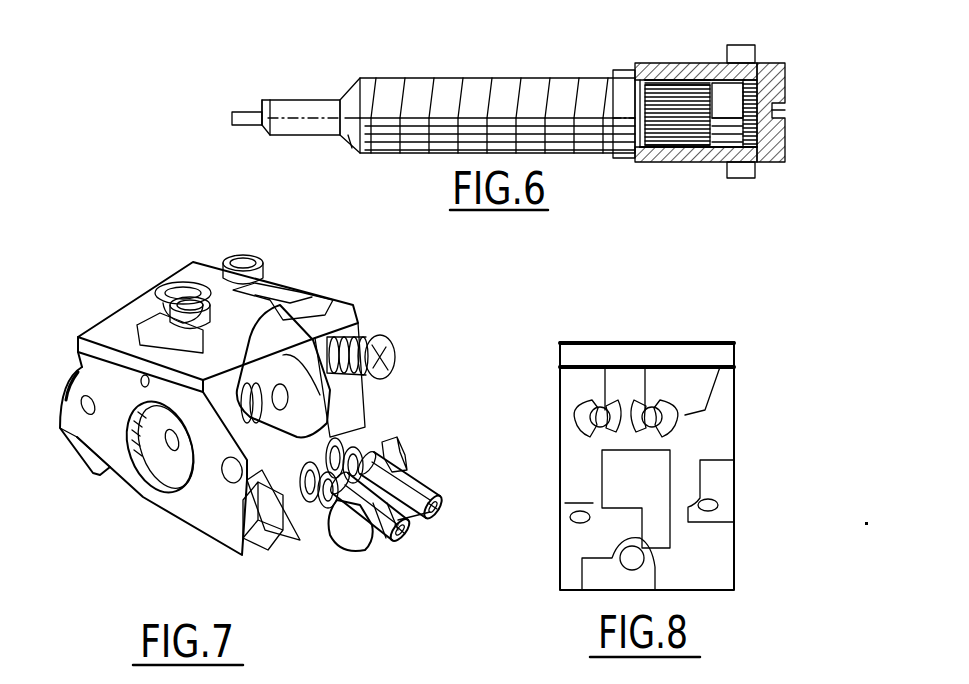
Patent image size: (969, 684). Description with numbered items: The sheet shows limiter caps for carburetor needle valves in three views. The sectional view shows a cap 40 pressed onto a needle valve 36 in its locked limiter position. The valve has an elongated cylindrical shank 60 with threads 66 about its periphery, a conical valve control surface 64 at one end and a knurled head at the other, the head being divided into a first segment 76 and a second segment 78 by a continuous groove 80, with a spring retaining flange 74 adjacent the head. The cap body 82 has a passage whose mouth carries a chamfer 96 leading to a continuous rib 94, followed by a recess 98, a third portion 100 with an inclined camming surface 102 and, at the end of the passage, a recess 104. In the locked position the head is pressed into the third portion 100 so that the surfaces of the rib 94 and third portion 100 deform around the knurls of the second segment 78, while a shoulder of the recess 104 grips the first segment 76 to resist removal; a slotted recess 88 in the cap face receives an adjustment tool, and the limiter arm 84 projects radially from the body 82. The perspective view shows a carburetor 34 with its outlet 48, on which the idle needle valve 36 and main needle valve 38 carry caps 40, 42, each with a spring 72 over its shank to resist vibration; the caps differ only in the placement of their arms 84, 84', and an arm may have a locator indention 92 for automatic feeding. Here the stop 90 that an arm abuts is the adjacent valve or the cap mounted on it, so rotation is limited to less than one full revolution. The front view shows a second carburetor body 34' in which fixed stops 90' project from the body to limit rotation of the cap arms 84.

In FIG. 7, the carburetor 34 is at (212, 375).
In FIG. 8, the carburetor body 34' is at (684, 466).
In FIG. 7, the idle needle valve 36 is at (268, 528).
In FIG. 7, the main needle valve 38 is at (360, 455).
In FIG. 7, the limiter cap 40 is at (388, 550).
In FIG. 8, the limiter cap 40 is at (606, 420).
In FIG. 7, the limiter cap 42 is at (450, 478).
In FIG. 8, the limiter cap 42 is at (645, 410).
In FIG. 7, the outlet 48 is at (167, 493).
In FIG. 6, the shank 60 is at (435, 85).
In FIG. 6, the valve control surface 64 is at (243, 108).
In FIG. 6, the threads 66 is at (445, 145).
In FIG. 7, the spring 72 is at (380, 452).
In FIG. 6, the flange 74 is at (622, 162).
In FIG. 6, the first head segment 76 is at (750, 163).
In FIG. 6, the second head segment 78 is at (660, 160).
In FIG. 6, the groove 80 is at (722, 160).
In FIG. 6, the cap body 82 is at (775, 63).
In FIG. 7, the cap body 82 is at (378, 545).
In FIG. 6, the limiter arm 84 is at (766, 37).
In FIG. 7, the limiter arm 84 is at (351, 552).
In FIG. 8, the limiter arm 84 is at (652, 410).
In FIG. 7, the limiter arm 84' is at (425, 418).
In FIG. 6, the slotted recess 88 is at (786, 110).
In FIG. 7, the slotted recess 88 is at (437, 510).
In FIG. 7, the stop 90 is at (469, 487).
In FIG. 8, the fixed stop 90' is at (642, 359).
In FIG. 7, the locator indention 92 is at (345, 548).
In FIG. 6, the rib 94 is at (656, 70).
In FIG. 6, the chamfer 96 is at (635, 63).
In FIG. 6, the recess 98 is at (672, 72).
In FIG. 6, the third portion 100 is at (716, 72).
In FIG. 6, the camming surface 102 is at (668, 160).
In FIG. 6, the recess 104 is at (760, 165).